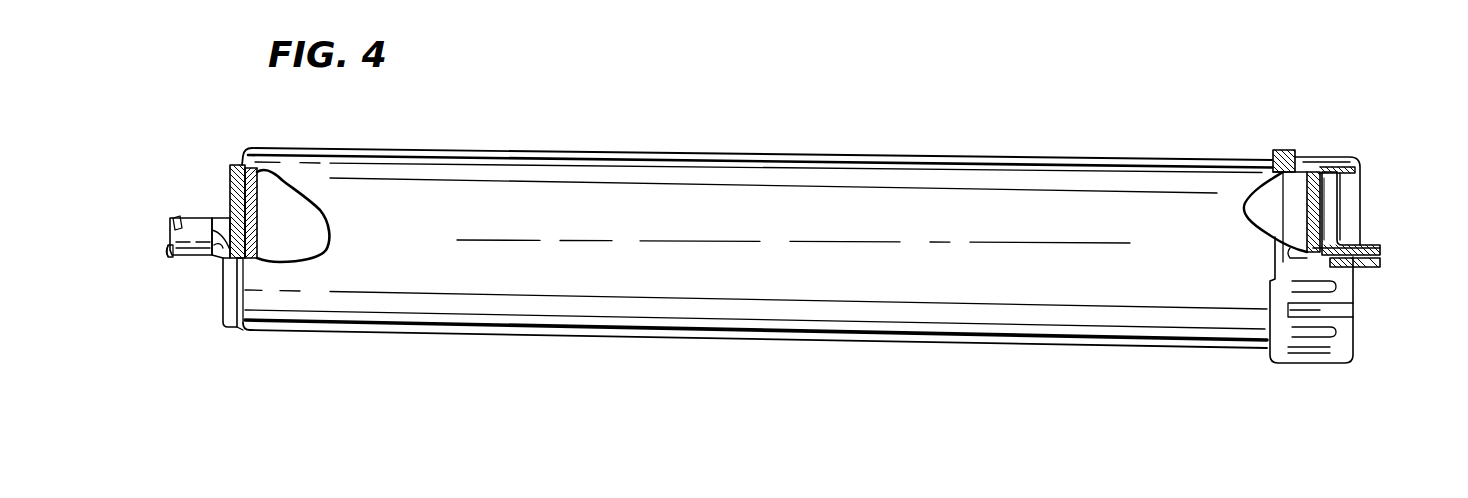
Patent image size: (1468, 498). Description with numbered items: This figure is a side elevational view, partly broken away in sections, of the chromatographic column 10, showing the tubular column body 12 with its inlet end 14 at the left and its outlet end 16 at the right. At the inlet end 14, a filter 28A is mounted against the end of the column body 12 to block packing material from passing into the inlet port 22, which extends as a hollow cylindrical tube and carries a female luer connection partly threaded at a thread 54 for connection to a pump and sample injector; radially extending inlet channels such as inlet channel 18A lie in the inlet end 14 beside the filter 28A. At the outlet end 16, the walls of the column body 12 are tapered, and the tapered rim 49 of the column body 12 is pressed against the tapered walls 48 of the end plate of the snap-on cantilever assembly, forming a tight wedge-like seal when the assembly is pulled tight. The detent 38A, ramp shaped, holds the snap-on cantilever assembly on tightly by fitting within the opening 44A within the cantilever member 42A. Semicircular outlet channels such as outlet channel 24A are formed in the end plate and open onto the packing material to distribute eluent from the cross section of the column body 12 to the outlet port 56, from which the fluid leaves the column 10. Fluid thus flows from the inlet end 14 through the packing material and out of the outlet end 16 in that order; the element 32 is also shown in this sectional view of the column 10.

The column 10 is at (752, 120).
The column body 12 is at (530, 165).
The inlet end 14 is at (207, 306).
The outlet end 16 is at (1378, 305).
The inlet channel 18A is at (230, 187).
The inlet port 22 is at (167, 243).
The outlet channel 24A is at (1337, 213).
The filter 28A is at (257, 224).
The second end wall 32 is at (1288, 207).
The detent 38A is at (1292, 160).
The cantilever member 42A is at (1317, 154).
The opening 44A is at (1280, 152).
The tapered walls 48 is at (1357, 177).
The tapered rim 49 is at (1350, 155).
The thread 54 is at (170, 256).
The outlet port 56 is at (1373, 267).